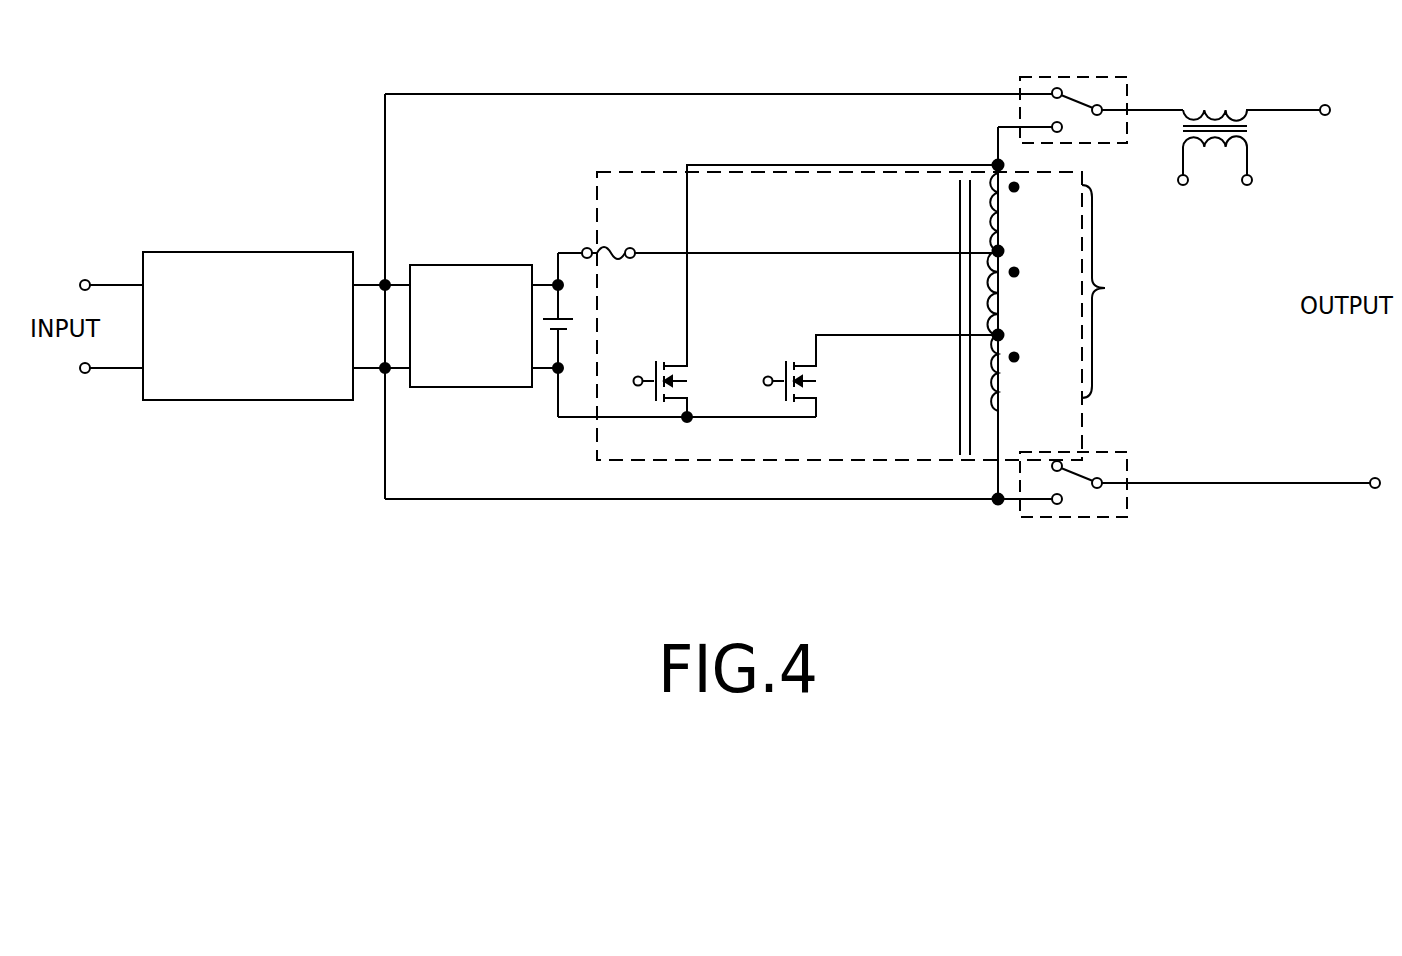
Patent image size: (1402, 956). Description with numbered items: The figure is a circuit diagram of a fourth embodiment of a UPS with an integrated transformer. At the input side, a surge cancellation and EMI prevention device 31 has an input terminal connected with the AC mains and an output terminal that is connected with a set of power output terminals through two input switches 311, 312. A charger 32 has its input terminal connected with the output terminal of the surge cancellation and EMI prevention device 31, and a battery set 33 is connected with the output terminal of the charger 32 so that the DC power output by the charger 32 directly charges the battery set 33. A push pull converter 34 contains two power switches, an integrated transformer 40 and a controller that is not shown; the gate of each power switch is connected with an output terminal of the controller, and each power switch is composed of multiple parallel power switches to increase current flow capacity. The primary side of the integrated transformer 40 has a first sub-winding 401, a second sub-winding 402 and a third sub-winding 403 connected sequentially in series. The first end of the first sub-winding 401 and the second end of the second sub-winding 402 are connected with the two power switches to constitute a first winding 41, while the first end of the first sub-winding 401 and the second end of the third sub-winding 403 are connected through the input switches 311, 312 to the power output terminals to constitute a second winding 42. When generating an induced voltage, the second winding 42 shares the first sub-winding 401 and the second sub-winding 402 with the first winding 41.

The surge cancellation and EMI prevention device 31 is at (215, 400).
The charger 32 is at (433, 387).
The battery set 33 is at (569, 335).
The push pull converter 34 is at (665, 170).
The integrated transformer 40 is at (985, 301).
The first winding 41 is at (816, 234).
The second winding 42 is at (1118, 291).
The first sub-winding 401 is at (1031, 212).
The second sub-winding 402 is at (1031, 293).
The third sub-winding 403 is at (1033, 373).
The input switch 311 is at (1045, 77).
The input switch 312 is at (1048, 517).